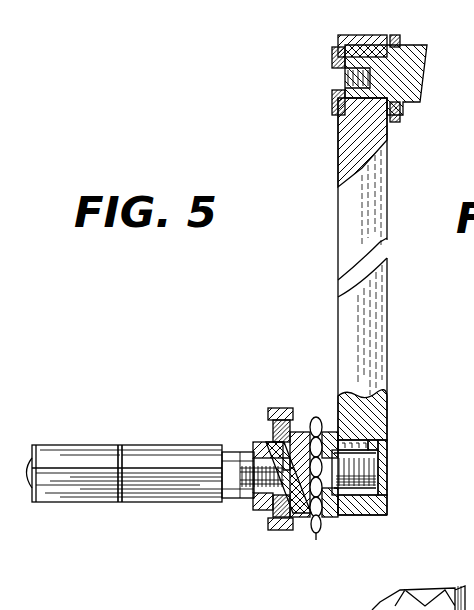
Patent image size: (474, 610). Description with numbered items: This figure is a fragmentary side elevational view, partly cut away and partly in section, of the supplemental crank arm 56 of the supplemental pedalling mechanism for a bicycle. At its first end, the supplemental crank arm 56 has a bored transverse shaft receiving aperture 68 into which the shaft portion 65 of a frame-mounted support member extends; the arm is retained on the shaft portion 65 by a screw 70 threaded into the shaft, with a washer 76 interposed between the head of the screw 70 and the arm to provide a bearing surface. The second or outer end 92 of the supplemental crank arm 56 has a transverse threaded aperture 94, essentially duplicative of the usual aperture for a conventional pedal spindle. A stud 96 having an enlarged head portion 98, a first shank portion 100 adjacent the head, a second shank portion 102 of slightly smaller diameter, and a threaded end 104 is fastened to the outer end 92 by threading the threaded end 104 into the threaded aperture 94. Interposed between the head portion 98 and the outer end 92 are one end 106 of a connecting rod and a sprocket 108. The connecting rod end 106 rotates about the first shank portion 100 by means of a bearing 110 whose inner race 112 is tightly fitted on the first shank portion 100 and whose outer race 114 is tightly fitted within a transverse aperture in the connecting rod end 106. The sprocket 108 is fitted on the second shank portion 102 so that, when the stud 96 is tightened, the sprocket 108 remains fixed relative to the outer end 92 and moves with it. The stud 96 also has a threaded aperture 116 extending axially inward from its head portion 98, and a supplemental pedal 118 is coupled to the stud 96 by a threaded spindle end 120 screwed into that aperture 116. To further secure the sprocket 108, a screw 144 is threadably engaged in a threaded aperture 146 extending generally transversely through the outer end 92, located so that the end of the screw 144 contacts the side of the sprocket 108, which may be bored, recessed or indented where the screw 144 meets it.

The supplemental crank arm 56 is at (389, 330).
The shaft portion 65 is at (410, 85).
The shaft receiving aperture 68 is at (362, 58).
The screw 70 is at (332, 92).
The washer 76 is at (332, 56).
The second or outer end 92 is at (388, 502).
The threaded aperture 94 is at (389, 462).
The stud 96 is at (216, 530).
The enlarged head portion 98 is at (254, 455).
The first shank portion 100 is at (322, 418).
The second shank portion 102 is at (322, 514).
The threaded end 104 is at (373, 515).
The connecting rod end 106 is at (280, 408).
The sprocket 108 is at (316, 535).
The bearing 110 is at (272, 430).
The inner race 112 is at (266, 518).
The outer race 114 is at (292, 530).
The threaded aperture 116 is at (264, 492).
The supplemental pedal 118 is at (92, 503).
The threaded spindle end 120 is at (245, 480).
The screw 144 is at (367, 446).
The threaded aperture 146 is at (372, 425).